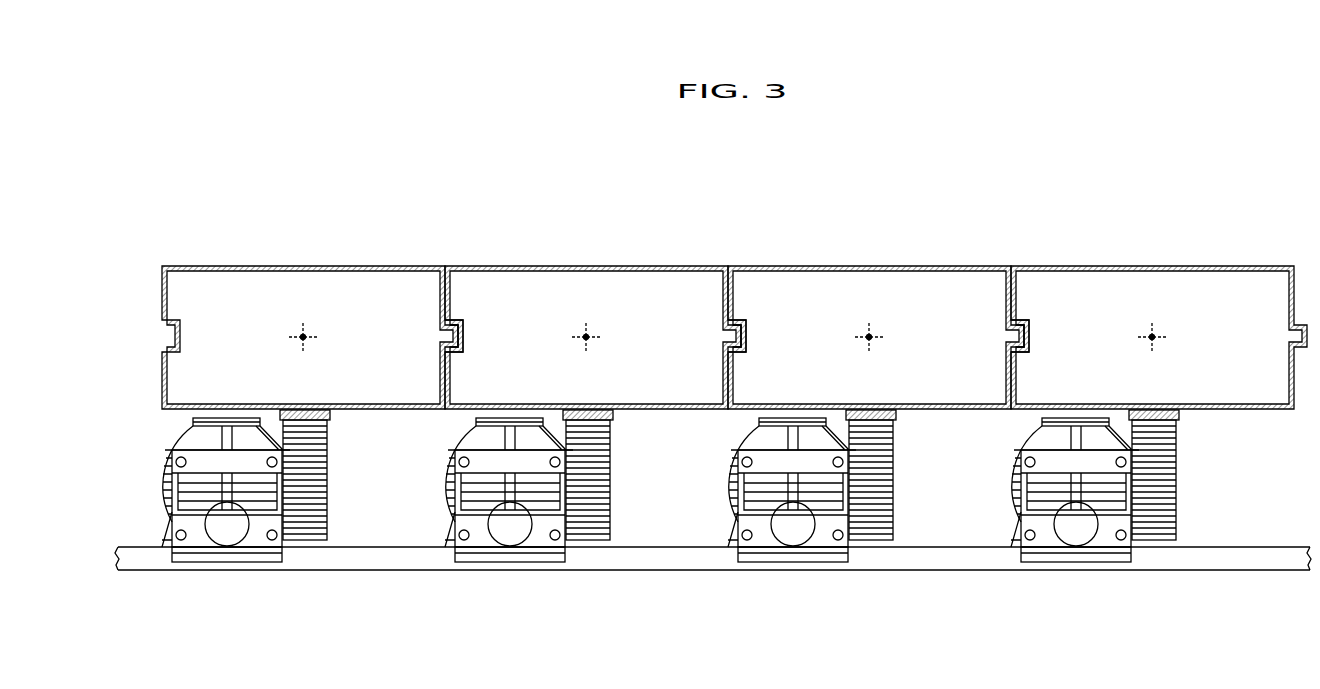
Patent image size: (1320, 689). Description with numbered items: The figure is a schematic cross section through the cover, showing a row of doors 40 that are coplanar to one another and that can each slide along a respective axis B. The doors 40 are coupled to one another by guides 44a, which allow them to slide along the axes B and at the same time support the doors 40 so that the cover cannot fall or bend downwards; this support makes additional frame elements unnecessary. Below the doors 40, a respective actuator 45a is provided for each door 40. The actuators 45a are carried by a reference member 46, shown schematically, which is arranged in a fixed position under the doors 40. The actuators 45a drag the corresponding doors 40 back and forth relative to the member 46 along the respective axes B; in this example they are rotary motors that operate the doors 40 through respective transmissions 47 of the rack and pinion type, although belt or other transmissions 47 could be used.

The door 40 is at (228, 264).
The guide 44a is at (758, 319).
The actuator 45a is at (163, 462).
The reference member 46 is at (653, 563).
The transmission 47 is at (327, 416).
The axis B is at (313, 336).